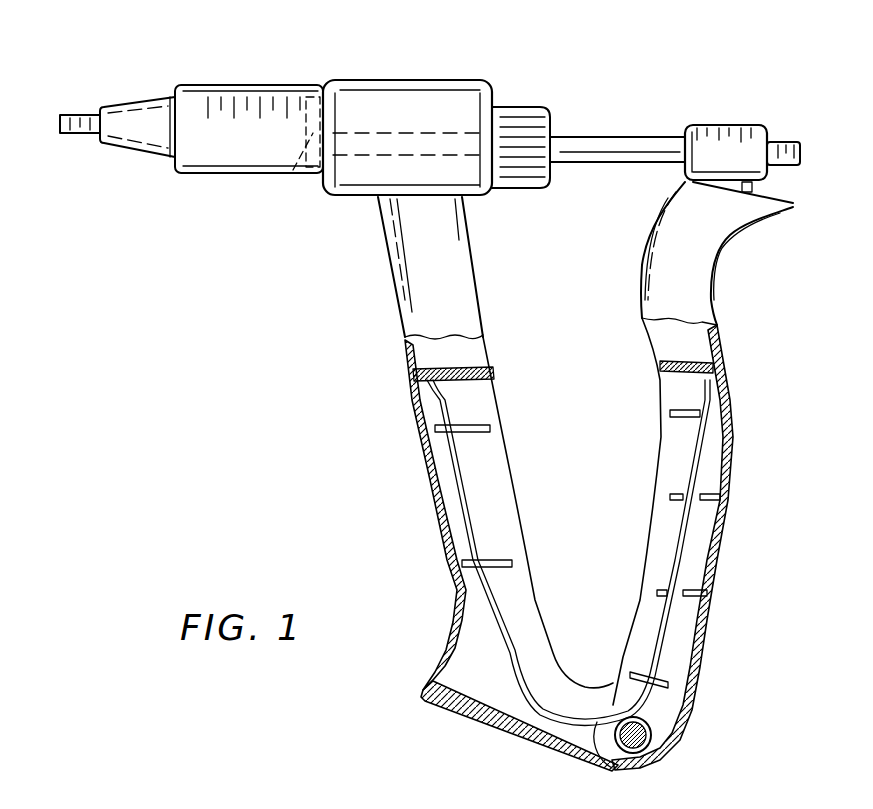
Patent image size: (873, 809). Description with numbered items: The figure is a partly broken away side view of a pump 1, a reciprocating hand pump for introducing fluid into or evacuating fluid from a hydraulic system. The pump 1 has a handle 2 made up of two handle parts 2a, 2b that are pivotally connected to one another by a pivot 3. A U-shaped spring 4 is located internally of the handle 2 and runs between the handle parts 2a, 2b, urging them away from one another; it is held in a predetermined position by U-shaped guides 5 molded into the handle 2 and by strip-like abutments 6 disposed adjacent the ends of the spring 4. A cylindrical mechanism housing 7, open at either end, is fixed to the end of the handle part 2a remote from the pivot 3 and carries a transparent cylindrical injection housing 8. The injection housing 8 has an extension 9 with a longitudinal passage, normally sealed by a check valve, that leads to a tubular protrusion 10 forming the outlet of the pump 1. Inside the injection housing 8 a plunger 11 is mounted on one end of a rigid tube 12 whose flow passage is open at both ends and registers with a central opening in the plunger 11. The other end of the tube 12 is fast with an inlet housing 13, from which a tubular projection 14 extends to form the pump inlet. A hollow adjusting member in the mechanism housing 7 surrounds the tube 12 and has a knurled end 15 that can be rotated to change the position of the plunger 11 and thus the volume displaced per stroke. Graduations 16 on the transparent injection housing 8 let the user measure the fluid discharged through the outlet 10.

The pump 1 is at (363, 447).
The handle 2 is at (468, 737).
The handle part 2a is at (408, 302).
The handle part 2b is at (715, 288).
The pivot 3 is at (650, 737).
The U-shaped spring 4 is at (687, 547).
The U-shaped guides 5 is at (507, 557).
The strip-like abutments 6 is at (470, 385).
The mechanism housing 7 is at (405, 85).
The injection housing 8 is at (270, 87).
The extension 9 is at (137, 97).
The tubular protrusion 10 is at (72, 135).
The plunger 11 is at (297, 165).
The tube 12 is at (620, 137).
The inlet housing 13 is at (720, 125).
The tubular projection 14 is at (787, 142).
The knurled end 15 is at (525, 107).
The graduations 16 is at (218, 140).